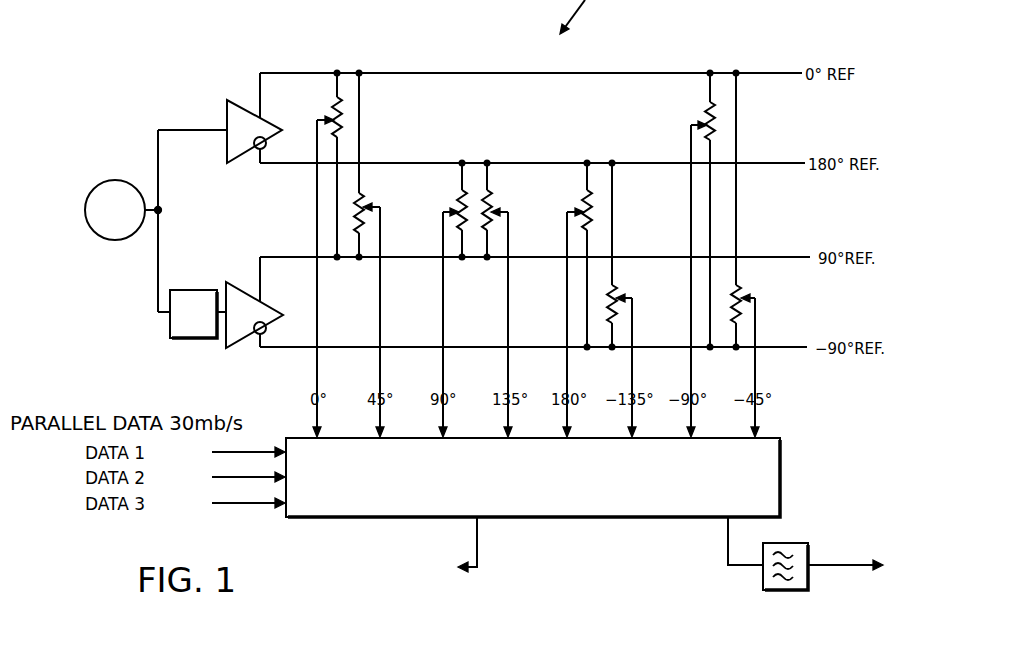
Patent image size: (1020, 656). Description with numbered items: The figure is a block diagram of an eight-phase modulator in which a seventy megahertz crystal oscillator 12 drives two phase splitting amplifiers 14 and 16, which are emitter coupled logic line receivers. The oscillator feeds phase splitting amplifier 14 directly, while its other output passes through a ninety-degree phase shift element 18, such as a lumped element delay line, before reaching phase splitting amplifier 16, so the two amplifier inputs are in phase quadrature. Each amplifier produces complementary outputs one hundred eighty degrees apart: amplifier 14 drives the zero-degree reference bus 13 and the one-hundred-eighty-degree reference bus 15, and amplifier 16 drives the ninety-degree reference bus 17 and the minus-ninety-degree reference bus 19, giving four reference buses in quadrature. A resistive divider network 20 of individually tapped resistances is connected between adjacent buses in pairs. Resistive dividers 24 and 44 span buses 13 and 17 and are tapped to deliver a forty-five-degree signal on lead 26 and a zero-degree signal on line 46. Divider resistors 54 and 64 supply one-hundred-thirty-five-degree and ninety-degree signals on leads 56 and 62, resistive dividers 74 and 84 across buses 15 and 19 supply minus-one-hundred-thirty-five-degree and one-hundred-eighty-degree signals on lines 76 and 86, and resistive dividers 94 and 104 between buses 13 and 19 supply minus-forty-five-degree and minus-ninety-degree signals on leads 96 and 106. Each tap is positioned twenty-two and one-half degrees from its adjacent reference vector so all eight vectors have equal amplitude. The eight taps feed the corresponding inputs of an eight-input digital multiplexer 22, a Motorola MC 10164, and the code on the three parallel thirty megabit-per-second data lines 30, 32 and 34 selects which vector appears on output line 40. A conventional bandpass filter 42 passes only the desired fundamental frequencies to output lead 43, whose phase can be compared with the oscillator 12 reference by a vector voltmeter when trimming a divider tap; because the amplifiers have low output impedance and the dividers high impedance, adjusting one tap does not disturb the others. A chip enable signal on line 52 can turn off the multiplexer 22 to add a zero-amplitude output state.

The crystal oscillator 12 is at (85, 206).
The reference bus 13 is at (397, 73).
The phase splitting amplifier 14 is at (231, 100).
The reference bus 15 is at (391, 163).
The phase splitting amplifier 16 is at (237, 282).
The reference bus 17 is at (399, 257).
The phase shift element 18 is at (193, 290).
The reference bus 19 is at (405, 347).
The resistive divider network 20 is at (528, 128).
The multiplexer 22 is at (780, 477).
The resistive divider 24 is at (363, 197).
The lead 26 is at (380, 290).
The parallel input data line 30 is at (233, 452).
The parallel input data line 32 is at (233, 477).
The parallel input data line 34 is at (233, 503).
The output line 40 is at (728, 558).
The bandpass filter 42 is at (787, 543).
The output lead 43 is at (853, 598).
The resistive divider 44 is at (330, 108).
The line 46 is at (317, 300).
The line 52 is at (477, 545).
The divider resistor 54 is at (487, 201).
The lead 56 is at (508, 291).
The lead 62 is at (443, 297).
The divider resistor 64 is at (458, 208).
The resistive divider 74 is at (619, 291).
The line 76 is at (632, 330).
The resistive divider 84 is at (584, 208).
The line 86 is at (567, 304).
The resistive divider 94 is at (743, 298).
The lead 96 is at (755, 374).
The resistive divider 104 is at (706, 109).
The lead 106 is at (691, 223).